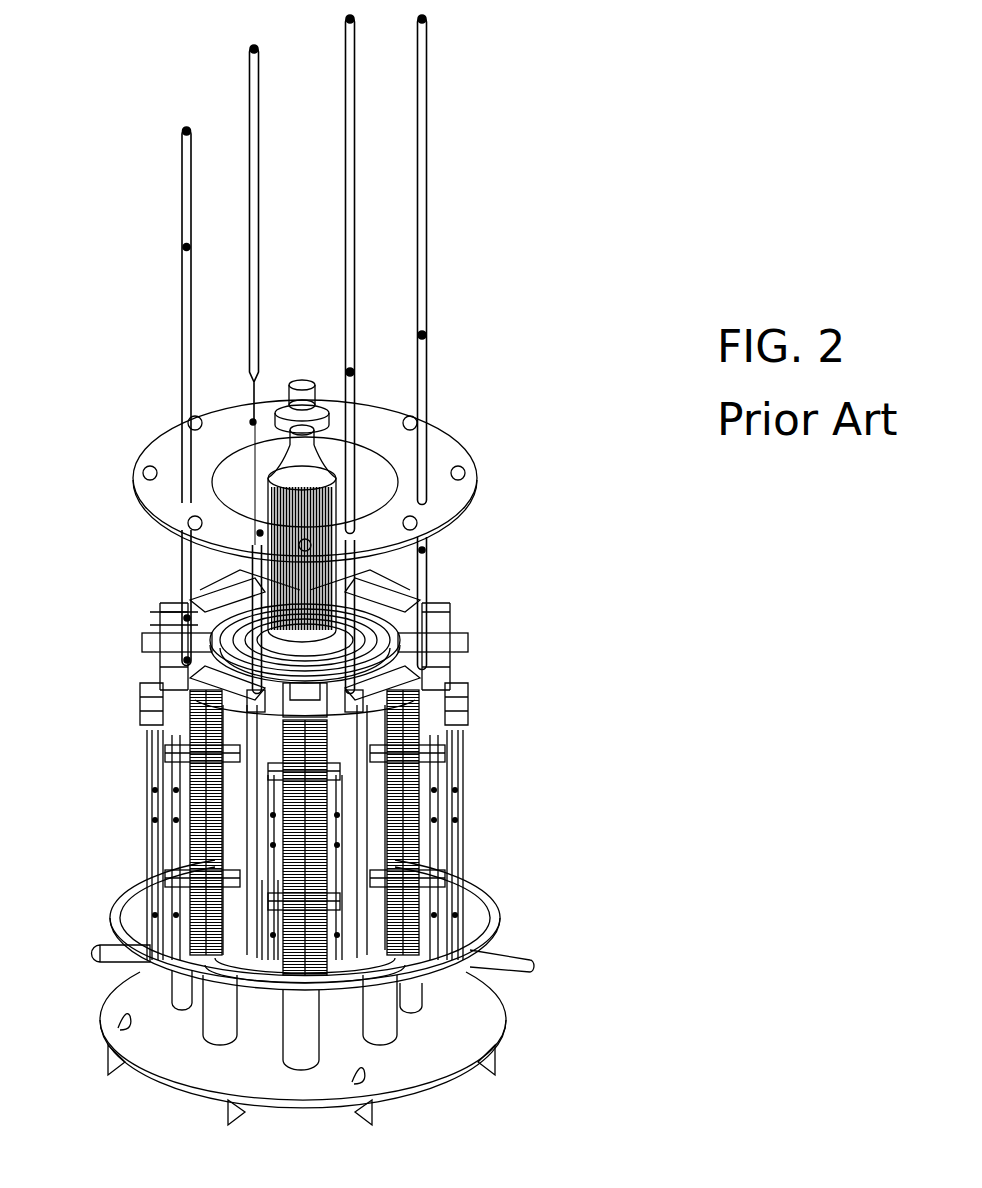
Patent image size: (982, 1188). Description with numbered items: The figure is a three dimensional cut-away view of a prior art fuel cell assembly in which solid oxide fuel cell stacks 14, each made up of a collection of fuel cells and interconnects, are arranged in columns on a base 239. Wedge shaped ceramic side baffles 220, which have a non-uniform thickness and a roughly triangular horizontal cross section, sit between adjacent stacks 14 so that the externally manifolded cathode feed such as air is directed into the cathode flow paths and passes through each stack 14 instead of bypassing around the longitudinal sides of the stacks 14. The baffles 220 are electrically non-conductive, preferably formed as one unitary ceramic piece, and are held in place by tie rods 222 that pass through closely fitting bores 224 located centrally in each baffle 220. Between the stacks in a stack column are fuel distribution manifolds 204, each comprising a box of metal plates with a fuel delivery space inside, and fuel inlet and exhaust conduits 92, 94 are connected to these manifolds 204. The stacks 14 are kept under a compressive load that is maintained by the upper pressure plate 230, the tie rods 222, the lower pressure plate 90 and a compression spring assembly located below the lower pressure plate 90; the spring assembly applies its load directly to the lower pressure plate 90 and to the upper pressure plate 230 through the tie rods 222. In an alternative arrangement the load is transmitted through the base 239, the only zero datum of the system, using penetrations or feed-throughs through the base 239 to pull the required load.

The solid oxide fuel cell stack 14 is at (332, 739).
The lower pressure plate 90 is at (492, 904).
The fuel inlet conduit 92 is at (266, 878).
The fuel exhaust conduit 94 is at (320, 895).
The fuel distribution manifold 204 is at (271, 777).
The wedge shaped ceramic side baffle 220 is at (443, 665).
The tie rod 222 is at (250, 225).
The bore 224 is at (187, 663).
The upper pressure plate 230 is at (143, 451).
The base 239 is at (106, 997).